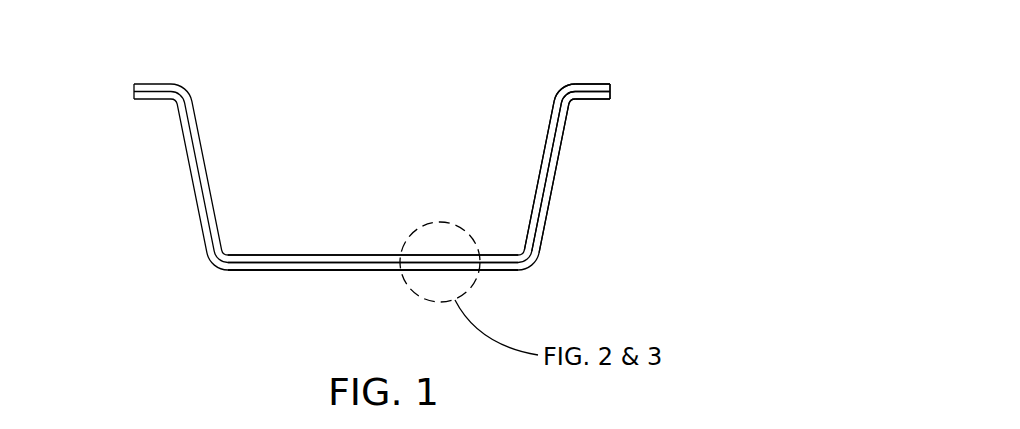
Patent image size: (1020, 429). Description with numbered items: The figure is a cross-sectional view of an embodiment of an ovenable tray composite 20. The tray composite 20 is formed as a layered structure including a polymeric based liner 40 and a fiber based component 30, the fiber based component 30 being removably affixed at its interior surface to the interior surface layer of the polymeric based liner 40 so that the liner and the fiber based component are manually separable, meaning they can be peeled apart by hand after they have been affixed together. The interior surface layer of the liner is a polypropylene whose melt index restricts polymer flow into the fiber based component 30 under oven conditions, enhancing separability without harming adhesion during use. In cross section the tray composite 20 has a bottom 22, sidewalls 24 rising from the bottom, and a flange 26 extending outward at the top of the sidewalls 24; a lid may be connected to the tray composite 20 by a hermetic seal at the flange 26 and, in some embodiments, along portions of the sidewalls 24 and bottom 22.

The ovenable tray composite 20 is at (150, 70).
The bottom 22 is at (280, 255).
The sidewalls 24 is at (542, 162).
The flange 26 is at (593, 83).
The fiber based component 30 is at (322, 270).
The polymeric based liner 40 is at (550, 98).